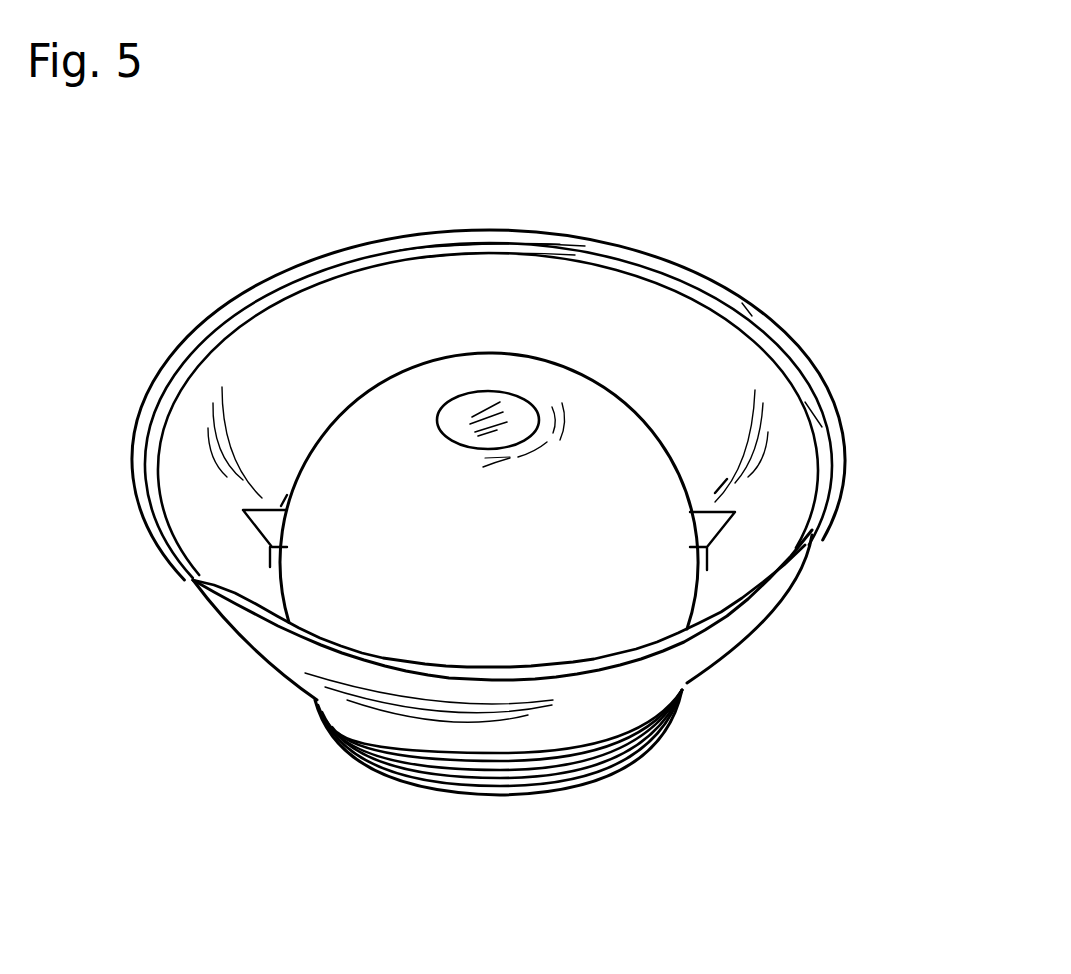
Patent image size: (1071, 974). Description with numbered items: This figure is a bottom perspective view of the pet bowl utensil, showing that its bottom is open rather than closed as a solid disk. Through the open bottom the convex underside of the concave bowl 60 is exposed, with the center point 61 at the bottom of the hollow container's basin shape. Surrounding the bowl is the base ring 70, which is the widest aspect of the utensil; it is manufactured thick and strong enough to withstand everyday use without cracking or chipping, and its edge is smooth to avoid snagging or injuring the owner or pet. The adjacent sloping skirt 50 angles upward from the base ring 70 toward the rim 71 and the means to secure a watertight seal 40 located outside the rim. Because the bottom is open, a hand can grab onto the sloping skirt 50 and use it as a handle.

The base ring 70 is at (647, 257).
The sloping skirt 50 is at (685, 668).
The means to secure a watertight seal outside of rim 40 is at (415, 760).
The rim 71 is at (500, 795).
The concave bowl 60 is at (372, 510).
The center point 61 is at (487, 418).